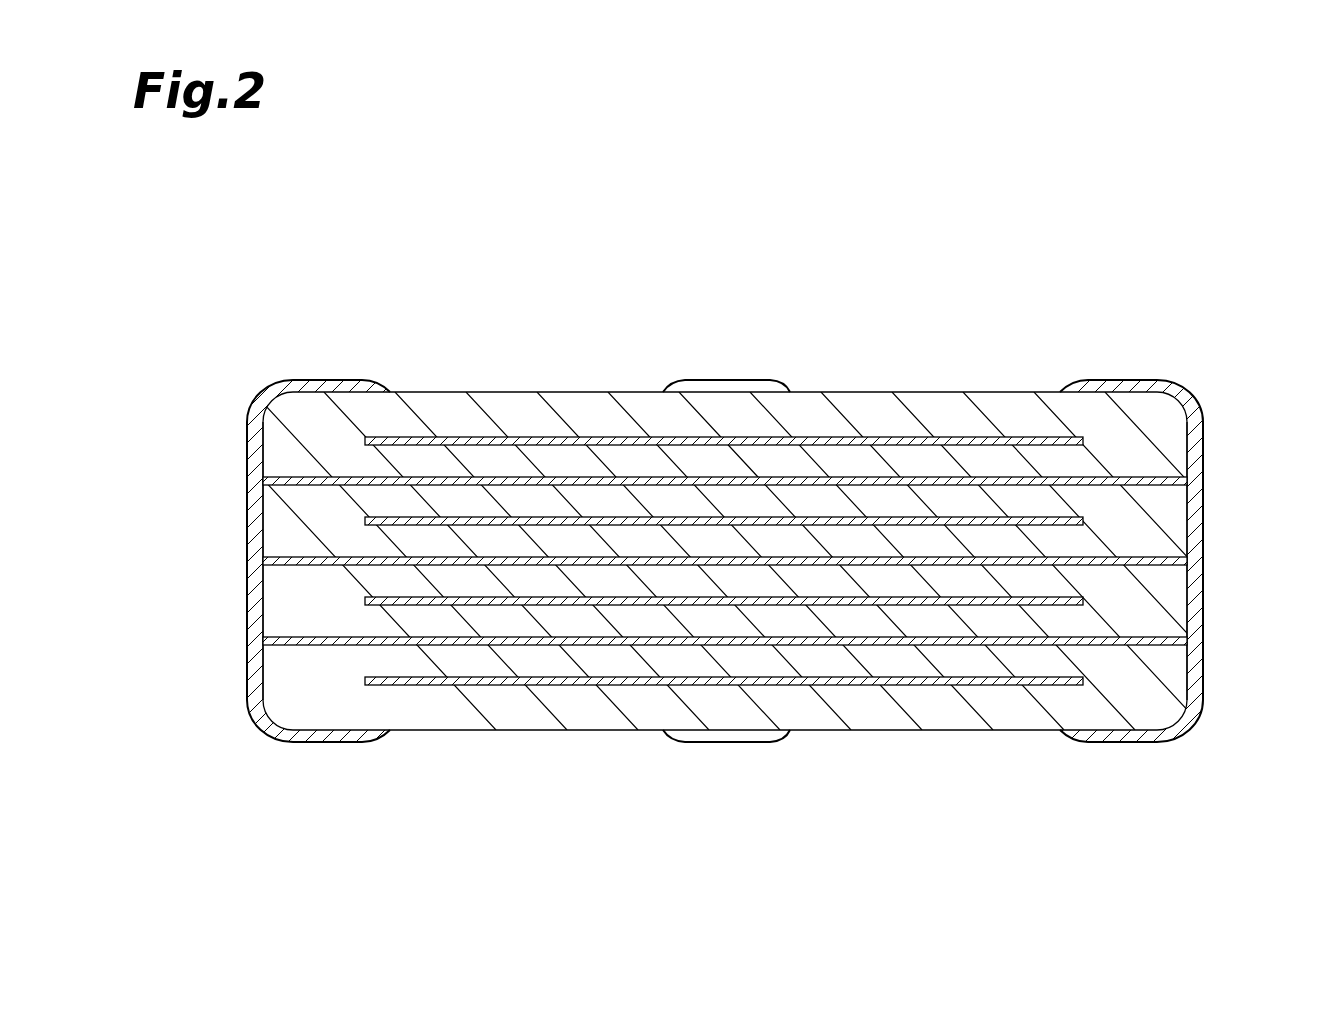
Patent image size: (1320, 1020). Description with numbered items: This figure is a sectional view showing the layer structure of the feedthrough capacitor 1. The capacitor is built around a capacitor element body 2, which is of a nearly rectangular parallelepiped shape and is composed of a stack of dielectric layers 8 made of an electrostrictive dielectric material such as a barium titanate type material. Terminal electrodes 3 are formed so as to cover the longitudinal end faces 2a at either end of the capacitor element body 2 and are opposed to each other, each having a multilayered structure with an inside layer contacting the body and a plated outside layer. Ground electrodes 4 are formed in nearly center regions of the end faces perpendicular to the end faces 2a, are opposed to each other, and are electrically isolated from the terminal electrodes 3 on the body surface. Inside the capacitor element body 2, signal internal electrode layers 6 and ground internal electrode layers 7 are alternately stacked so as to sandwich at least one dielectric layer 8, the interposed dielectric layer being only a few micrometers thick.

The feedthrough capacitor 1 is at (1124, 258).
The capacitor element body 2 is at (460, 375).
The longitudinal end faces 2a is at (265, 532).
The terminal electrodes 3 is at (298, 380).
The ground electrodes 4 is at (728, 380).
The signal internal electrode layers 6 is at (984, 477).
The ground internal electrode layers 7 is at (867, 437).
The dielectric layers 8 is at (528, 402).